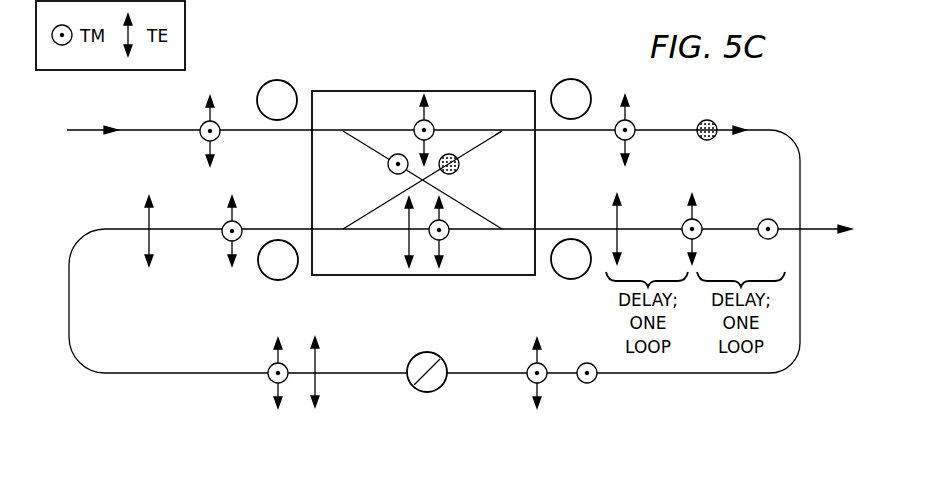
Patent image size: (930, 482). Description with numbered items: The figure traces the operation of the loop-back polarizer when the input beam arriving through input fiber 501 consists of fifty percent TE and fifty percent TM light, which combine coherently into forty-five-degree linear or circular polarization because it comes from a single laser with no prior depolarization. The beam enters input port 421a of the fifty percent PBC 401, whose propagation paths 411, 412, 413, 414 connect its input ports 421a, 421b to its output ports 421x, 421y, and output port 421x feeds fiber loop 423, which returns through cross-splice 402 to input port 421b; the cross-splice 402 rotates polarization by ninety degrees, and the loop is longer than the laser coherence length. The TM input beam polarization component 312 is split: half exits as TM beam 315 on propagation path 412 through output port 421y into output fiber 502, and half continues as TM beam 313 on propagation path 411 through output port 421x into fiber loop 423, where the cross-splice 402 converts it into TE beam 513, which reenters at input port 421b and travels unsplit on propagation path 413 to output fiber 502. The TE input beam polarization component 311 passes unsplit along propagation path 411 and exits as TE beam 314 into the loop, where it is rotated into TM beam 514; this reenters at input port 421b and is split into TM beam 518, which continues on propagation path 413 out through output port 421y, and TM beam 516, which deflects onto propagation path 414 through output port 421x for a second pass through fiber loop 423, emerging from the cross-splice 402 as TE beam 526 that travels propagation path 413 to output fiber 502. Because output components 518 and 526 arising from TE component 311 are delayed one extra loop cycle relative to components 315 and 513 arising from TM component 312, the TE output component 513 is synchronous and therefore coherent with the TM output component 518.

The 50 percent PBC 401 is at (385, 91).
The cross-splice 402 is at (433, 391).
The propagation path 411 is at (460, 129).
The propagation path 412 is at (353, 143).
The propagation path 413 is at (335, 224).
The propagation path 414 is at (500, 139).
The input port 421a is at (279, 80).
The input port 421b is at (268, 281).
The output port 421x is at (575, 79).
The output port 421y is at (560, 277).
The fiber loop 423 is at (695, 374).
The TE input beam polarization component 311 is at (206, 115).
The TM input beam polarization component 312 is at (205, 143).
The TM beam 313 is at (632, 139).
The TE beam 314 is at (630, 110).
The TM beam 315 is at (391, 173).
The input fiber 501 is at (80, 131).
The output fiber 502 is at (822, 228).
The TE beam 513 is at (447, 241).
The TM beam 514 is at (226, 244).
The TM beam 516 is at (459, 173).
The TM beam 518 is at (688, 219).
The TE beam 526 is at (407, 241).